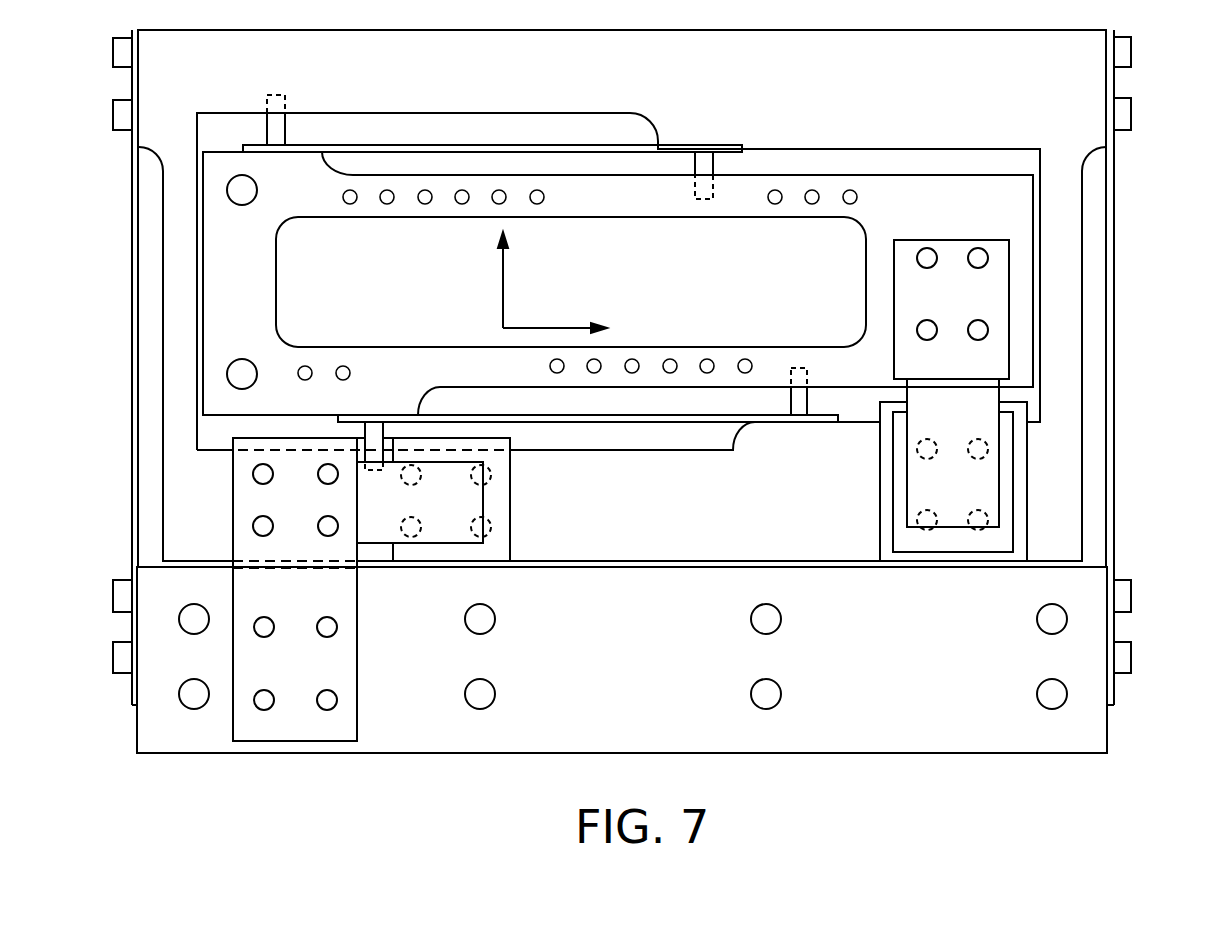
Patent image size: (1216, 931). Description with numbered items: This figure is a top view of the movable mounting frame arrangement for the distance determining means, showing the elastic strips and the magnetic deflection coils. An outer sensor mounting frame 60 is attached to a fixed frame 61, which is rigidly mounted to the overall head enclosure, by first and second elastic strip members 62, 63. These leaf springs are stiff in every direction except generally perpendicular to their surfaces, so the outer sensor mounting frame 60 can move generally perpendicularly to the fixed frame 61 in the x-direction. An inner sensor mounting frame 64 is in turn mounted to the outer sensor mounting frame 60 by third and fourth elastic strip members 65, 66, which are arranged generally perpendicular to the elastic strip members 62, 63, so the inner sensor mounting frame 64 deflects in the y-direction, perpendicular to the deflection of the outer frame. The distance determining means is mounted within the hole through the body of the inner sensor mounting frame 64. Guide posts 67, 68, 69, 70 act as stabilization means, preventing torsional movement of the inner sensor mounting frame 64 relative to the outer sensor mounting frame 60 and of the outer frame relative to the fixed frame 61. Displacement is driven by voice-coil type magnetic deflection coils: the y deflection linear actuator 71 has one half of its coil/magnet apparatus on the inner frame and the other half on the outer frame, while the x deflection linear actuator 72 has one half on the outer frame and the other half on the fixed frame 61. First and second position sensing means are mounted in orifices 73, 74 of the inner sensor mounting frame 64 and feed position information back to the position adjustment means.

The outer sensor mounting frame 60 is at (912, 104).
The fixed frame 61 is at (611, 679).
The first elastic strip member 62 is at (1115, 270).
The second elastic strip member 63 is at (130, 197).
The inner sensor mounting frame 64 is at (259, 291).
The third elastic strip member 65 is at (535, 145).
The fourth elastic strip member 66 is at (520, 415).
The guide post 67 is at (287, 128).
The guide post 68 is at (715, 167).
The guide post 69 is at (807, 400).
The guide post 70 is at (373, 433).
The y deflection linear actuator 71 is at (969, 494).
The x deflection linear actuator 72 is at (462, 512).
The orifice 73 is at (232, 200).
The orifice 74 is at (238, 385).